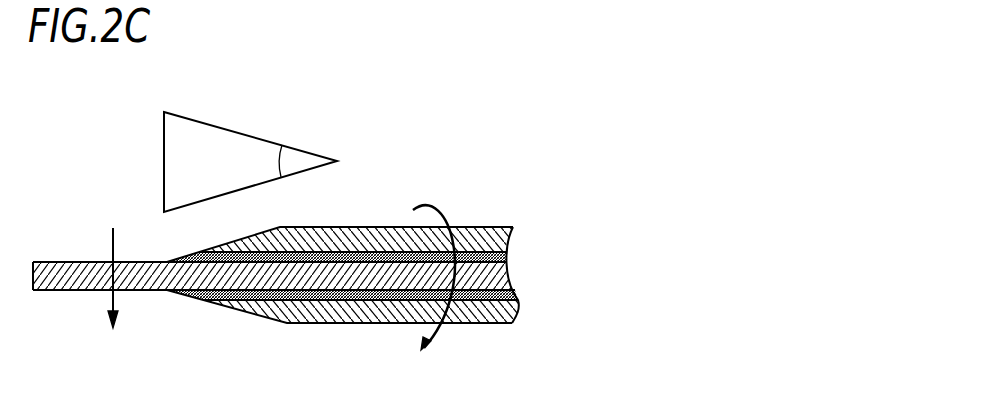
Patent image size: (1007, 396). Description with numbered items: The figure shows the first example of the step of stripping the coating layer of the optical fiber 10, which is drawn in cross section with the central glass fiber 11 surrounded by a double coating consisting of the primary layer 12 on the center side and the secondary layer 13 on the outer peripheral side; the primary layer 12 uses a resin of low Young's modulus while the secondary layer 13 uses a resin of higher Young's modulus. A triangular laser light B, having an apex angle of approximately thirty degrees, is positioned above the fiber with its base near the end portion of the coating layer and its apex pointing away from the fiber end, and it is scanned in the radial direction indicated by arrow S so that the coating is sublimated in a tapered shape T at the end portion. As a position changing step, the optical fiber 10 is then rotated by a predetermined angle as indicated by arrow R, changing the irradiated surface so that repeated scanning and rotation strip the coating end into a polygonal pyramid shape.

The optical fiber 10 is at (336, 270).
The glass fiber 11 is at (502, 277).
The primary layer 12 is at (510, 258).
The secondary layer 13 is at (590, 297).
The triangular laser light B is at (205, 126).
The arrow S is at (110, 235).
The arrow R is at (447, 202).
The tapered portion T is at (220, 307).